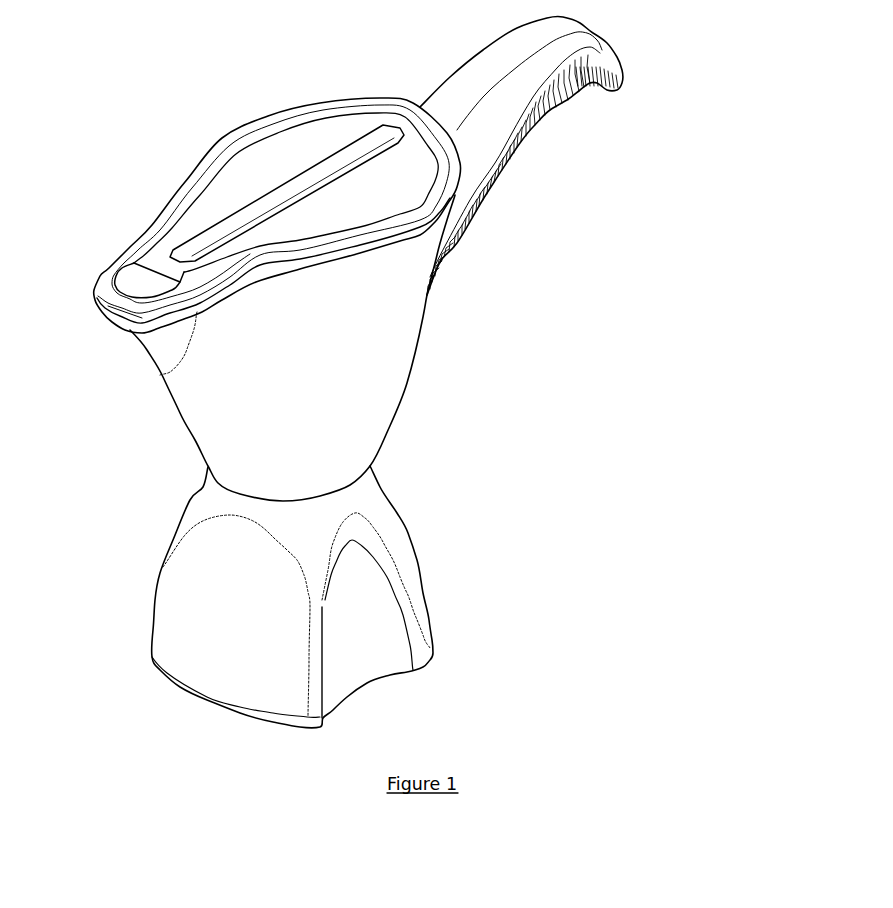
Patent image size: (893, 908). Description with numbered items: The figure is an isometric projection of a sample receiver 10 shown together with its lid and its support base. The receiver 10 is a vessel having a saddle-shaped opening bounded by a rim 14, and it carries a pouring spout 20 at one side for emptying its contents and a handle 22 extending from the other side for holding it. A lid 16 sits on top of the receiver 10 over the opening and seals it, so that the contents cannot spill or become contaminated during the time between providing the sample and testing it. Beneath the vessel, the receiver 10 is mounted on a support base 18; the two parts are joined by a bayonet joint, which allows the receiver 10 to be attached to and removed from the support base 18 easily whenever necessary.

The receiver 10 is at (342, 349).
The rim 14 is at (168, 322).
The lid 16 is at (255, 173).
The support base 18 is at (397, 534).
The pouring spout 20 is at (138, 338).
The handle 22 is at (525, 82).